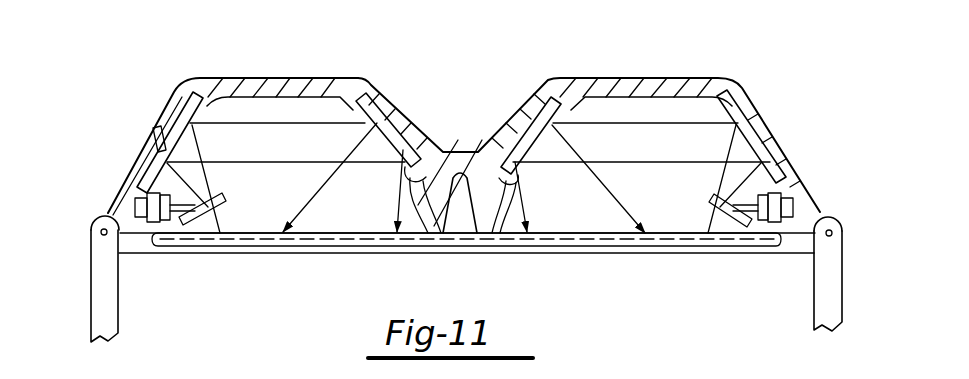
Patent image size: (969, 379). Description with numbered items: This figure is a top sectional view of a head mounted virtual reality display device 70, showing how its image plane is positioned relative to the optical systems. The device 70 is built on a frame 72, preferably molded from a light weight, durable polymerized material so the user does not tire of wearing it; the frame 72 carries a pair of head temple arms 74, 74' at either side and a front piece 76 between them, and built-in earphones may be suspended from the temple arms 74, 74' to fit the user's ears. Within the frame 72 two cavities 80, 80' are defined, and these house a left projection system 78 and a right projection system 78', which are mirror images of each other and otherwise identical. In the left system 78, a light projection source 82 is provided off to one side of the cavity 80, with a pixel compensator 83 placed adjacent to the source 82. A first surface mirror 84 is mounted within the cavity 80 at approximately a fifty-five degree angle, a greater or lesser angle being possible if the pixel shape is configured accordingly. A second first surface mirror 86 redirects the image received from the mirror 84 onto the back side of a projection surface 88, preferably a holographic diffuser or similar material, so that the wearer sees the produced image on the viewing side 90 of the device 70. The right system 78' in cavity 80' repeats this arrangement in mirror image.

The head mounted display device 70 is at (116, 144).
The frame 72 is at (327, 88).
The head temple arm 74 is at (132, 295).
The head temple arm 74' is at (786, 281).
The front piece 76 is at (433, 153).
The left projection system 78 is at (170, 112).
The right projection system 78' is at (763, 114).
The cavity 80 is at (271, 67).
The cavity 80' is at (636, 60).
The light projection source 82 is at (162, 222).
The pixel compensator 83 is at (213, 235).
The first surface mirror 84 is at (158, 132).
The first surface mirror 86 is at (402, 102).
The projection surface 88 is at (328, 238).
The viewing side 90 is at (385, 256).